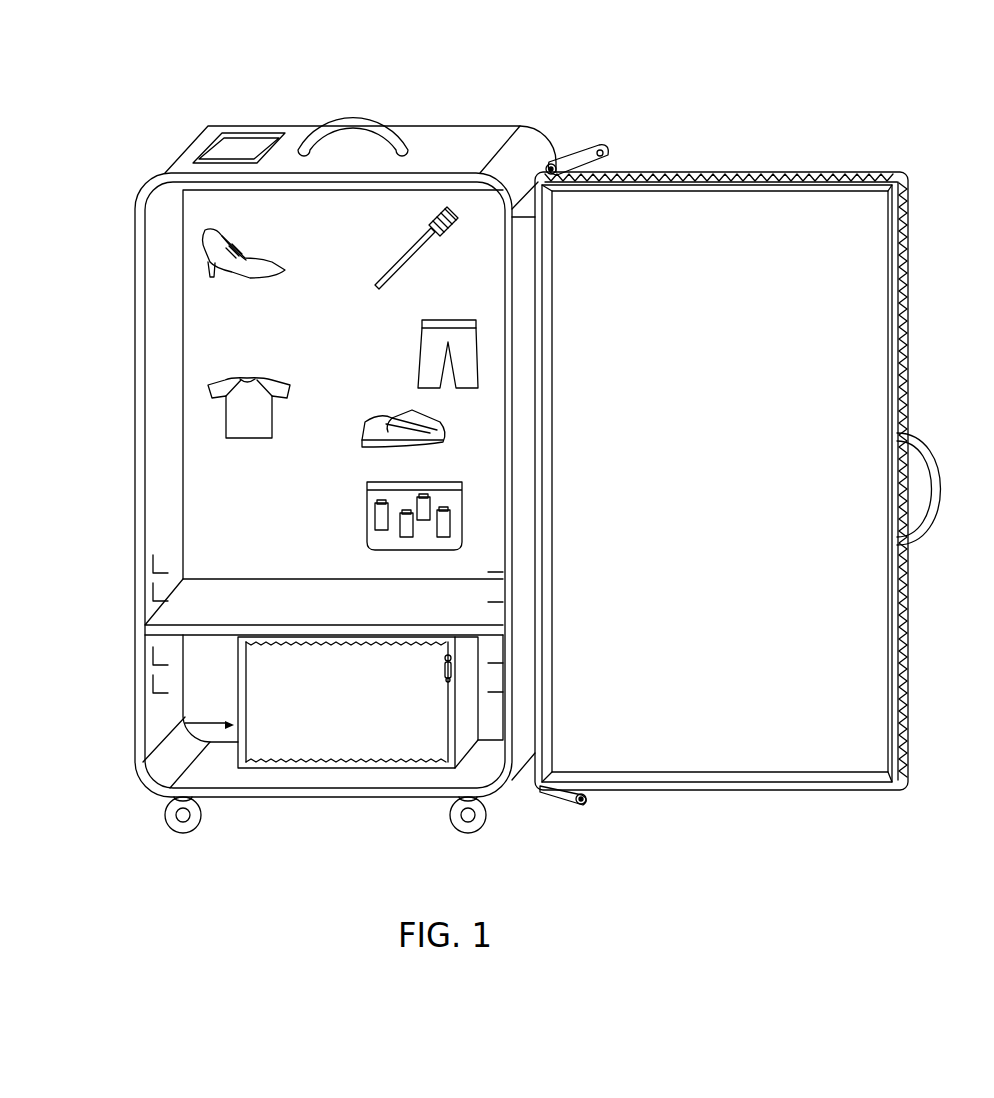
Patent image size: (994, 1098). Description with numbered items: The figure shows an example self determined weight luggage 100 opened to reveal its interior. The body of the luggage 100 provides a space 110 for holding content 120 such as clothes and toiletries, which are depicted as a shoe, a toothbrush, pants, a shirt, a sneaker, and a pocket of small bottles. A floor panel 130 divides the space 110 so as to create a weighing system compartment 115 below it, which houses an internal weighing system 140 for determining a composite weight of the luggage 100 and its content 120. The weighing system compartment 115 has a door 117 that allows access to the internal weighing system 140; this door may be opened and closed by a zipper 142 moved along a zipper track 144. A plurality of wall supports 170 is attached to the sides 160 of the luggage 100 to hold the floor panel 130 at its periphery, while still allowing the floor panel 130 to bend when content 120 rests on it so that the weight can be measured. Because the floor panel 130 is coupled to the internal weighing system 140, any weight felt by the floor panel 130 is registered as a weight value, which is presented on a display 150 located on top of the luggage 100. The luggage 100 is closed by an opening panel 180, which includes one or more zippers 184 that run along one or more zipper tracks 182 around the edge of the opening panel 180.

The self determined weight luggage 100 is at (620, 76).
The space 110 is at (342, 363).
The weighing system compartment 115 is at (192, 703).
The door 117 is at (362, 721).
The content 120 is at (267, 262).
The floor panel 130 is at (230, 604).
The internal weighing system 140 is at (163, 738).
The zipper 142 is at (439, 684).
The zipper track 144 is at (444, 725).
The display 150 is at (258, 132).
The sides 160 is at (153, 412).
The wall supports 170 is at (148, 683).
The opening panel 180 is at (692, 162).
The zipper track 182 is at (808, 171).
The zipper 184 is at (566, 150).